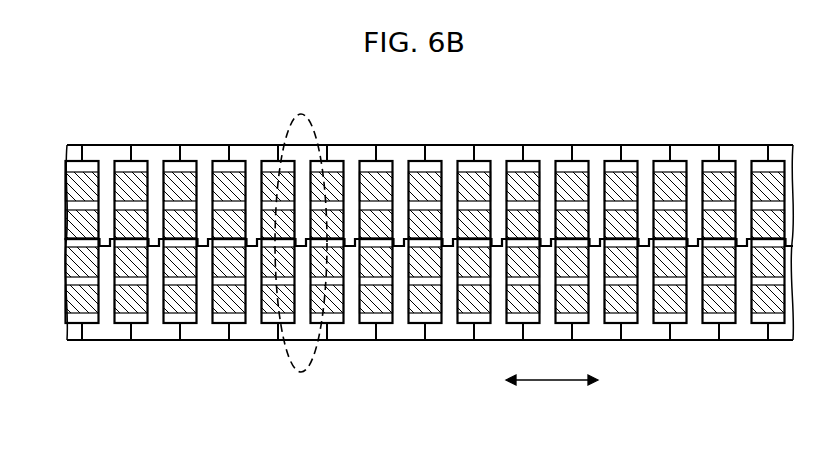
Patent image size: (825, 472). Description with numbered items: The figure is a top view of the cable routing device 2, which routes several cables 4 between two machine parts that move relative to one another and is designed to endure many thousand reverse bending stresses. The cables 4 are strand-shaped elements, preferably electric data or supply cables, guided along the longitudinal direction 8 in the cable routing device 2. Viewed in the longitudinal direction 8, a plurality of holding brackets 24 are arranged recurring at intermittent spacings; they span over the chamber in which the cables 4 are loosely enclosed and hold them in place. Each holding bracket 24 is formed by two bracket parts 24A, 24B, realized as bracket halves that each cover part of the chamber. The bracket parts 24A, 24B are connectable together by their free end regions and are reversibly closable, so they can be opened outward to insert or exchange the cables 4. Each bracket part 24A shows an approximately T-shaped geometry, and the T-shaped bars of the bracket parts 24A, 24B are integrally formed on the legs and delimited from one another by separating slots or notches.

The cable routing device 2 is at (470, 122).
The cable 4 is at (77, 228).
The longitudinal direction 8 is at (552, 382).
The holding bracket 24 is at (105, 286).
The bracket part 24A is at (205, 300).
The bracket part 24B is at (205, 190).